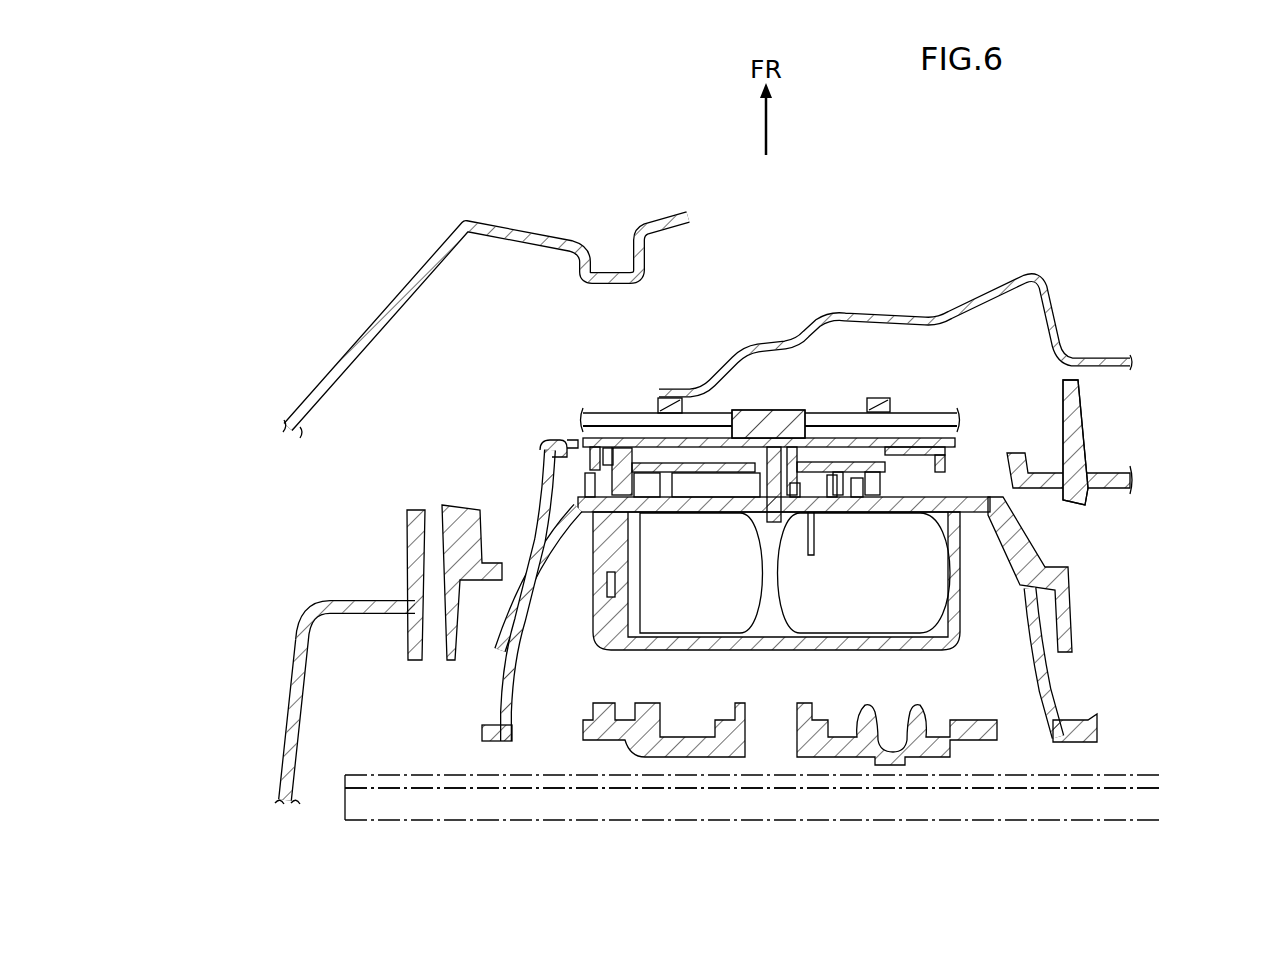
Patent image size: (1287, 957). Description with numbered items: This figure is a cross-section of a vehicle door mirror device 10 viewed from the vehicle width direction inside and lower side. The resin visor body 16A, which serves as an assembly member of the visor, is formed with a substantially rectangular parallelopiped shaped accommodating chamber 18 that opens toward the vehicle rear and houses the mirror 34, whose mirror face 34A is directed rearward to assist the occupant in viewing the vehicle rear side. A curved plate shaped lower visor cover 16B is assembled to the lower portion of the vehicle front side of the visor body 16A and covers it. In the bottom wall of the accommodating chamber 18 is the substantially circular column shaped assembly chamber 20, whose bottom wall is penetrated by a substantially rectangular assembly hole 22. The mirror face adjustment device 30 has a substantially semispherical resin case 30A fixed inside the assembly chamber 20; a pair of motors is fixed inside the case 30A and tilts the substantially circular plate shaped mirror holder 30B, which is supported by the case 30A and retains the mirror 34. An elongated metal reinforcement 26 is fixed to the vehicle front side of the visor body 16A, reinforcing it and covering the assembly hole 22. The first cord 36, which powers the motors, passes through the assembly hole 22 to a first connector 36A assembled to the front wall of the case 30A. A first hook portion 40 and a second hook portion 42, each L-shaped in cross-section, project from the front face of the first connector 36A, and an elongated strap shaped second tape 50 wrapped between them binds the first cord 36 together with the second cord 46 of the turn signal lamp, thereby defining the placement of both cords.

The vehicle structure 10 is at (366, 160).
The visor body 16A is at (322, 606).
The lower visor cover 16B is at (372, 333).
The accommodating chamber 18 is at (300, 757).
The assembly chamber 20 is at (550, 478).
The assembly hole 22 is at (575, 440).
The reinforcement 26 is at (975, 292).
The mirror face adjustment device 30 is at (482, 735).
The case 30A is at (1022, 545).
The mirror holder 30B is at (1098, 732).
The mirror 34 is at (580, 823).
The mirror face 34A is at (842, 792).
The first cord 36 is at (935, 414).
The first connector 36A is at (950, 463).
The first hook portion 40 is at (890, 398).
The second hook portion 42 is at (660, 402).
The second cord 46 is at (835, 413).
The second tape 50 is at (770, 408).